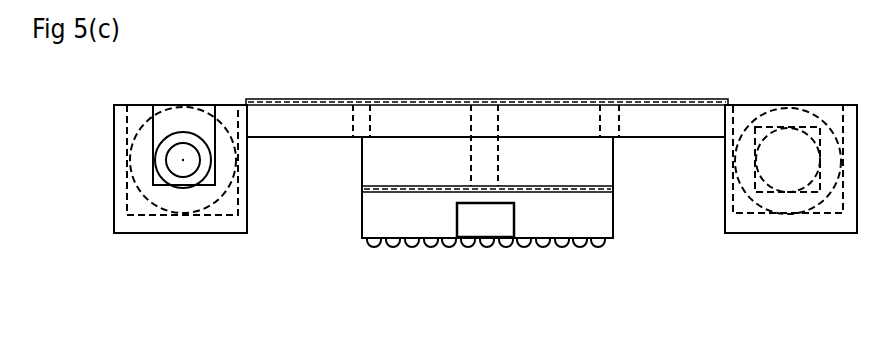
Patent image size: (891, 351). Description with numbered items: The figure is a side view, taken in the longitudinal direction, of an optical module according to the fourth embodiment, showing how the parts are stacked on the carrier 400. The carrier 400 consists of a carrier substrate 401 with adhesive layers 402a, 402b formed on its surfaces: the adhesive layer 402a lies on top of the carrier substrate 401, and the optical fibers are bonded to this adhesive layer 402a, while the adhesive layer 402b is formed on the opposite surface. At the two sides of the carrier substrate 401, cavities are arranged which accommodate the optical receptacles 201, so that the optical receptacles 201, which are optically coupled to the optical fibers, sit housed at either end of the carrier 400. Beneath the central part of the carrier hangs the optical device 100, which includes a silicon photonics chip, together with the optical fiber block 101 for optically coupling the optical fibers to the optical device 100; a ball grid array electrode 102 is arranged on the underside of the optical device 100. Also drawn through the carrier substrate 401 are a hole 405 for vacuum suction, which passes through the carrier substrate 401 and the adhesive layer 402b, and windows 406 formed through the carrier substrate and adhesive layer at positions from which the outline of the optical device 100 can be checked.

The carrier 400 is at (112, 103).
The optical receptacle 201 is at (185, 124).
The carrier substrate 401 is at (598, 157).
The adhesive layer 402a is at (270, 99).
The adhesive layer 402b is at (362, 188).
The hole for vacuum suction 405 is at (500, 128).
The window 406 is at (350, 128).
The optical device 100 is at (362, 220).
The optical fiber block 101 is at (503, 223).
The ball grid array electrode 102 is at (485, 248).